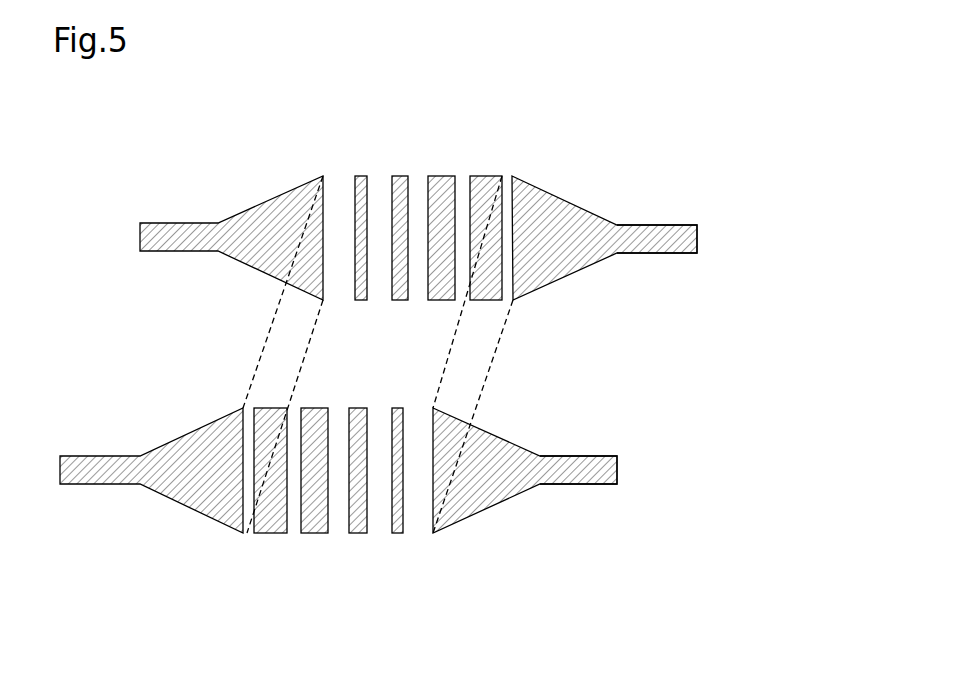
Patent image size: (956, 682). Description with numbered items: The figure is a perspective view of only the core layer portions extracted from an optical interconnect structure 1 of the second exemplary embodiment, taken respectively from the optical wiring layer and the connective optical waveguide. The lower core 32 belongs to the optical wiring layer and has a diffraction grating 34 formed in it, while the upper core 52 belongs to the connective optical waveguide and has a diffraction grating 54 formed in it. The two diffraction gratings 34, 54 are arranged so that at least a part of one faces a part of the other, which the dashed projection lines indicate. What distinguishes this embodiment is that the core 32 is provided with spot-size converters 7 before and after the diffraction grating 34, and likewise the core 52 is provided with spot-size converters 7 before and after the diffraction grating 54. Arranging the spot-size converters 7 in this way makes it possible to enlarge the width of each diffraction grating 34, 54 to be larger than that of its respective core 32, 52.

The optical interconnect structure 1 is at (452, 372).
The spot-size converter 7 is at (539, 557).
The core 32 is at (575, 470).
The diffraction grating 34 is at (427, 557).
The core 52 is at (657, 228).
The diffraction grating 54 is at (507, 143).